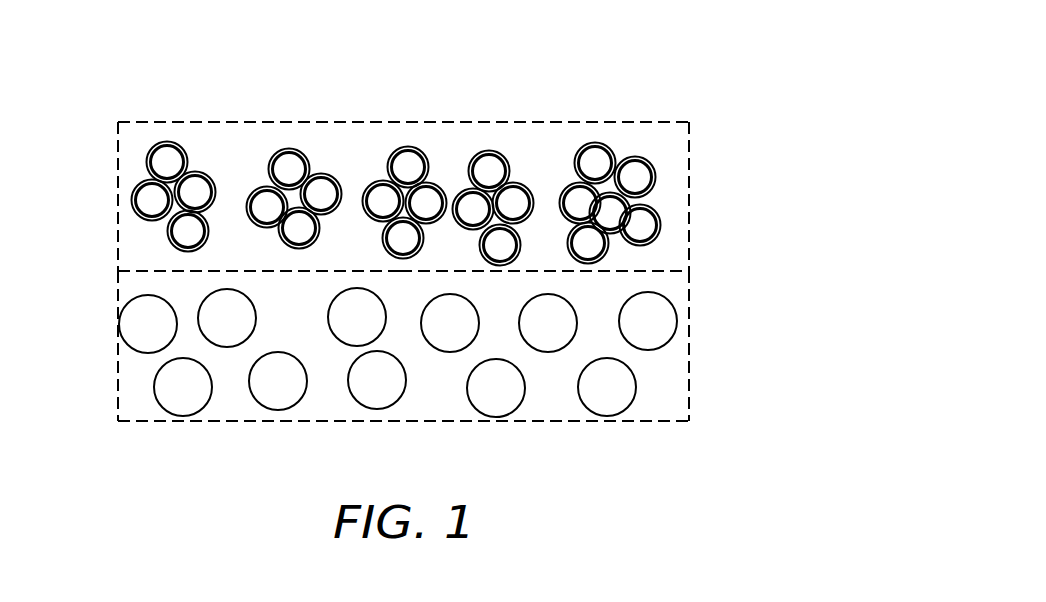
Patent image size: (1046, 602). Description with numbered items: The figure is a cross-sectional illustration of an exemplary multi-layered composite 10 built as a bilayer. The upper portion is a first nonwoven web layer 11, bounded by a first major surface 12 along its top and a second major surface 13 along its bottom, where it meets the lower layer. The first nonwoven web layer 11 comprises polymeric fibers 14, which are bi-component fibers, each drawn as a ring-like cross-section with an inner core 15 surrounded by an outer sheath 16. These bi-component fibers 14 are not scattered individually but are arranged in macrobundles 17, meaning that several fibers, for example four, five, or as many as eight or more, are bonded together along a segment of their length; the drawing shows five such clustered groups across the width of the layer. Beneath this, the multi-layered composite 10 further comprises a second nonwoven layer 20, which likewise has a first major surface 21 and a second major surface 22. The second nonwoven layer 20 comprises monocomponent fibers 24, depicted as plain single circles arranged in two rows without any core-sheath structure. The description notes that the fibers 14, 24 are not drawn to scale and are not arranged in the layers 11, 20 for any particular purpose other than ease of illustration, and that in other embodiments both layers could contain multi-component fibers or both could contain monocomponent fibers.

The multi-layered composite 10 is at (103, 52).
The first nonwoven web layer 11 is at (692, 162).
The first major surface 12 is at (612, 121).
The second major surface 13 is at (652, 271).
The polymeric fibers 14 is at (293, 172).
The core 15 is at (490, 170).
The sheath 16 is at (510, 162).
The macrobundles 17 is at (138, 142).
The second nonwoven layer 20 is at (693, 378).
The first major surface 21 is at (276, 422).
The second major surface 22 is at (180, 268).
The monocomponent fibers 24 is at (630, 400).